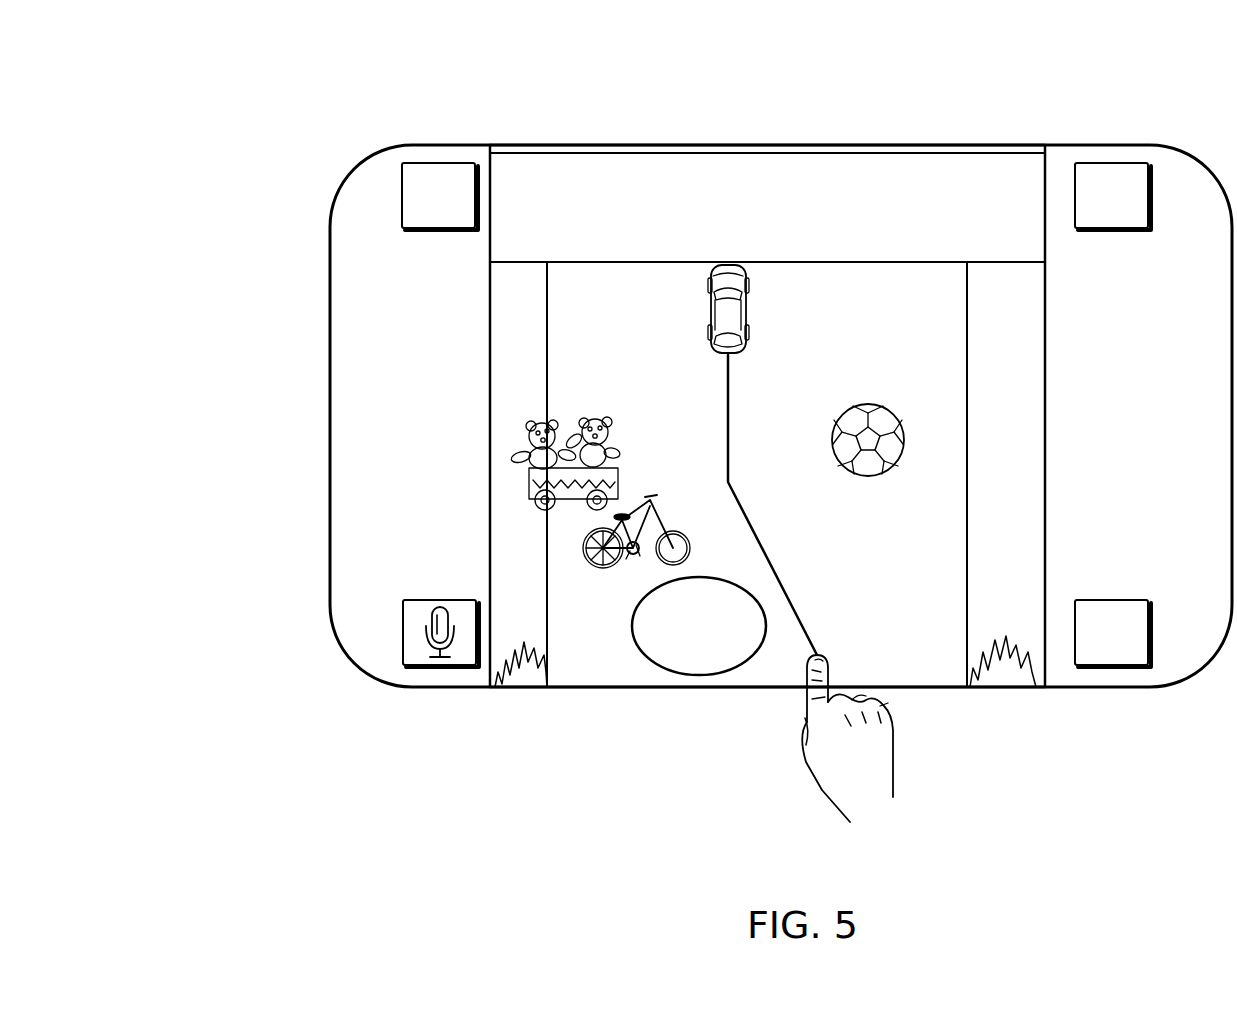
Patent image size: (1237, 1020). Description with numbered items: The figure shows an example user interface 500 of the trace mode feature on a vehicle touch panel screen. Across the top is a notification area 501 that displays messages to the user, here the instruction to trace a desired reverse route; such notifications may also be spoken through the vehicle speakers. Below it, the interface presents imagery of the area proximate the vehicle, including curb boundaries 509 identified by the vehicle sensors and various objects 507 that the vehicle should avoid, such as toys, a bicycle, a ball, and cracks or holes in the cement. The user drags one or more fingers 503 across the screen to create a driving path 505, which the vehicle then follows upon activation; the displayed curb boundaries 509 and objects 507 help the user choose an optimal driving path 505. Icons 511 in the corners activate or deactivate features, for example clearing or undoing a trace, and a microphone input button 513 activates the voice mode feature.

The user interface 500 is at (257, 100).
The notification area 501 is at (963, 168).
The fingers 503 is at (800, 745).
The driving path 505 is at (727, 393).
The objects 507 is at (596, 420).
The curb boundaries 509 is at (547, 344).
The icons 511 is at (442, 230).
The microphone input button 513 is at (437, 597).